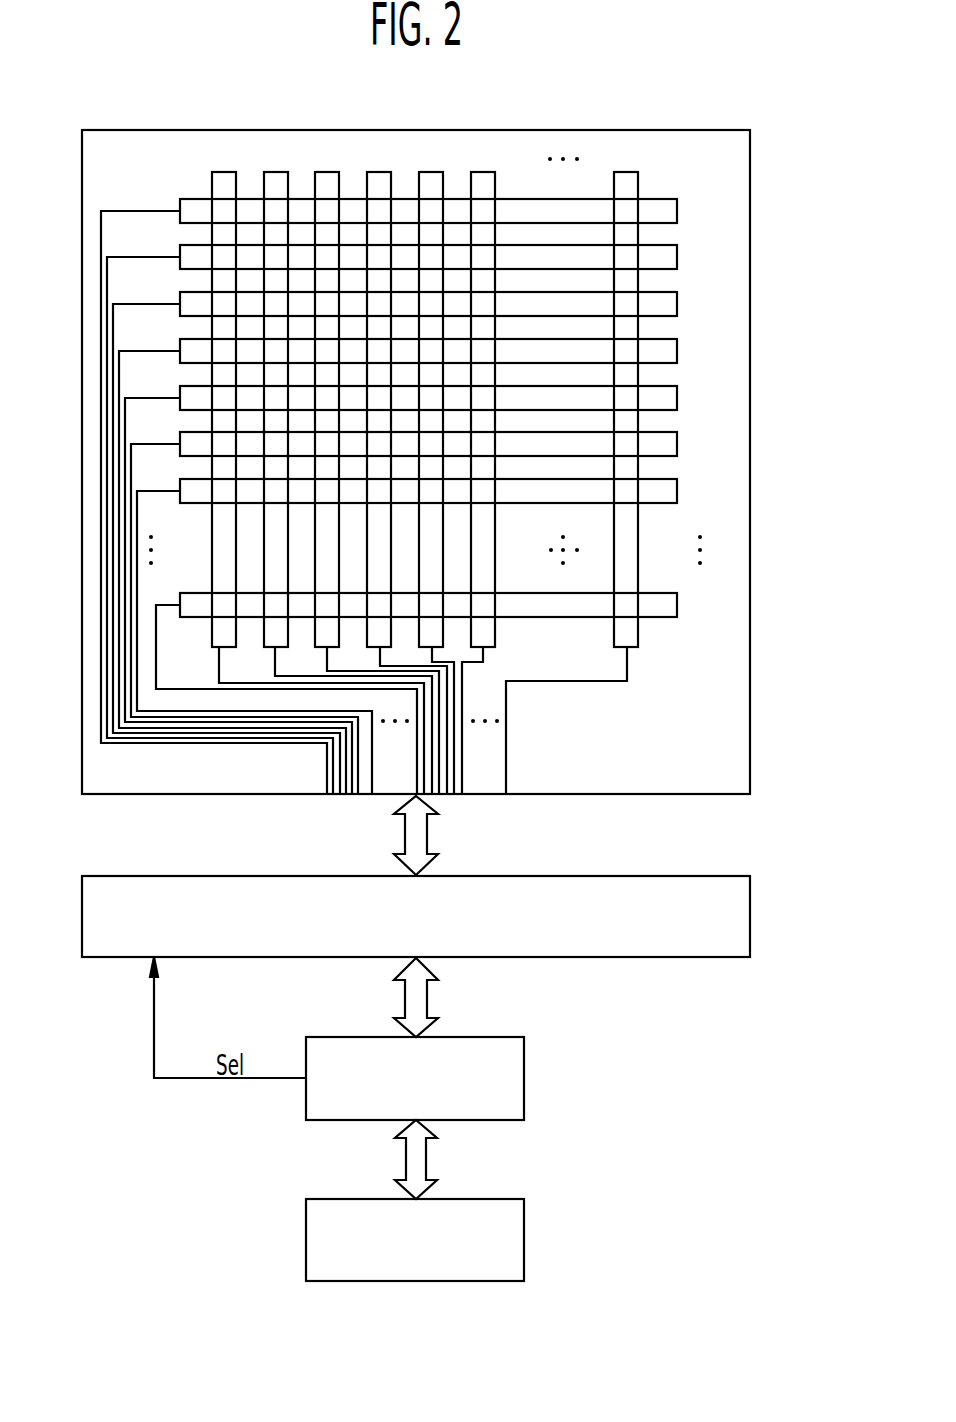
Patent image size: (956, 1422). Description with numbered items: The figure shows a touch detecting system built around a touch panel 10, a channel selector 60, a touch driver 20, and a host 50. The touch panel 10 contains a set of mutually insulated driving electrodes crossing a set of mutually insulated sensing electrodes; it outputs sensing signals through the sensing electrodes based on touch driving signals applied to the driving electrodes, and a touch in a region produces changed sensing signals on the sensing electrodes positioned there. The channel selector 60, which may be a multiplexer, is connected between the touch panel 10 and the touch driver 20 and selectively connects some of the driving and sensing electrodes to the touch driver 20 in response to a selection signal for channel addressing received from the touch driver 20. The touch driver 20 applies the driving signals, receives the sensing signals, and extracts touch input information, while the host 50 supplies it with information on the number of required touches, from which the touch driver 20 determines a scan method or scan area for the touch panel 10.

The touch panel 10 is at (750, 462).
The channel selector 60 is at (750, 913).
The touch driver 20 is at (524, 1077).
The host 50 is at (524, 1238).